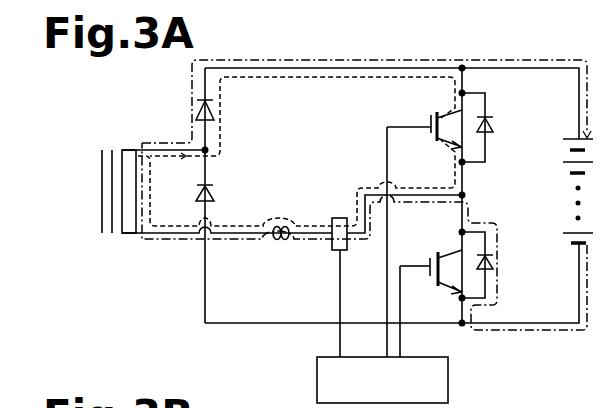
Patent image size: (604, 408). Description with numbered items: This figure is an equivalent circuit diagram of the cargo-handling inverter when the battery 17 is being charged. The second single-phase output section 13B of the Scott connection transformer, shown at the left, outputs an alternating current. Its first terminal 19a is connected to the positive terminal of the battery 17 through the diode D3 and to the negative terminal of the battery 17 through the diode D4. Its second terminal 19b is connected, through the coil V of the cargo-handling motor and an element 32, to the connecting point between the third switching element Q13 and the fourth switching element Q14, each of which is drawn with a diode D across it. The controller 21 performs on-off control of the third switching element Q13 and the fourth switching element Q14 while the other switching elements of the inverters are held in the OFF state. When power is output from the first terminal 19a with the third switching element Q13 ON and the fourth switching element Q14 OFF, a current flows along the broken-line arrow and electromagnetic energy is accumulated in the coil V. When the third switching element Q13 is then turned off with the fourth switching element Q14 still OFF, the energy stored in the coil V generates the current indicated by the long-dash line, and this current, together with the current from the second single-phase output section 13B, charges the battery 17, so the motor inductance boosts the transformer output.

The second single-phase output section 13B is at (122, 208).
The first terminal 19a is at (142, 143).
The second terminal 19b is at (142, 240).
The diode D3 is at (215, 110).
The diode D4 is at (215, 193).
The coil V is at (281, 225).
The current detector 32 is at (338, 217).
The third switching element Q13 is at (422, 115).
The fourth switching element Q14 is at (427, 254).
The freewheel diode D is at (494, 126).
The battery 17 is at (566, 236).
The controller 21 is at (449, 382).